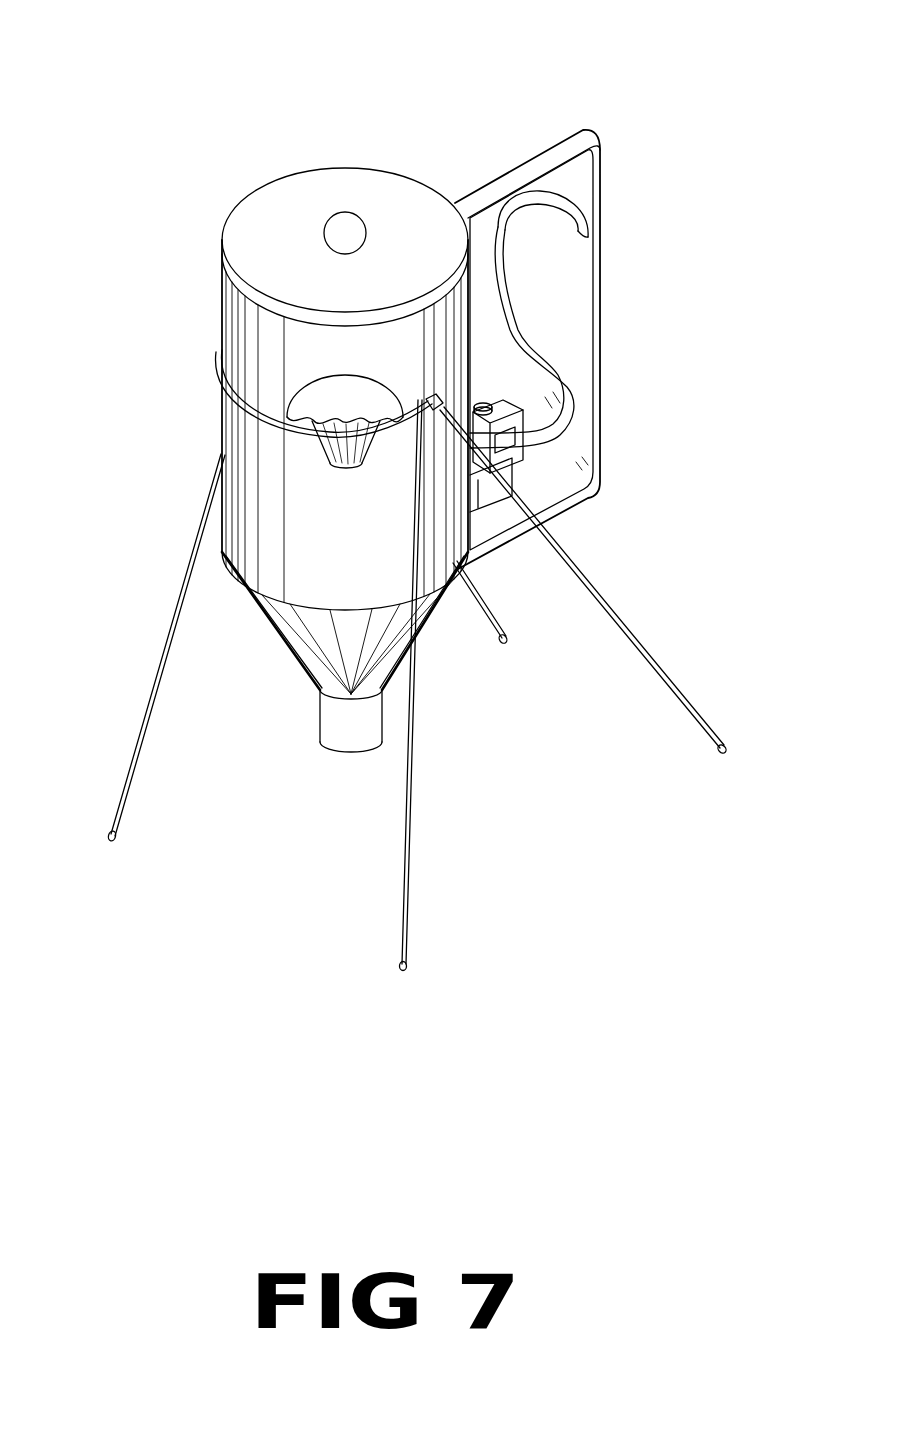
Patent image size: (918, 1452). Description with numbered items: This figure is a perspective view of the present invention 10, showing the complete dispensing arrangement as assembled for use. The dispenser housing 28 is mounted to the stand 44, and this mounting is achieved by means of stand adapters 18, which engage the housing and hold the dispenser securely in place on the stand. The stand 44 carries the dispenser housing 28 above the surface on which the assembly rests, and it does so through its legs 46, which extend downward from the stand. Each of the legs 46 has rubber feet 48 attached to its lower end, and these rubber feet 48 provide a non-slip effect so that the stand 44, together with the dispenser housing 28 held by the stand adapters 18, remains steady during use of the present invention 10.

The present invention 10 is at (266, 146).
The stand adapters 18 is at (432, 404).
The dispenser housing 28 is at (218, 308).
The stand 44 is at (405, 808).
The legs 46 is at (485, 598).
The rubber feet 48 is at (715, 745).